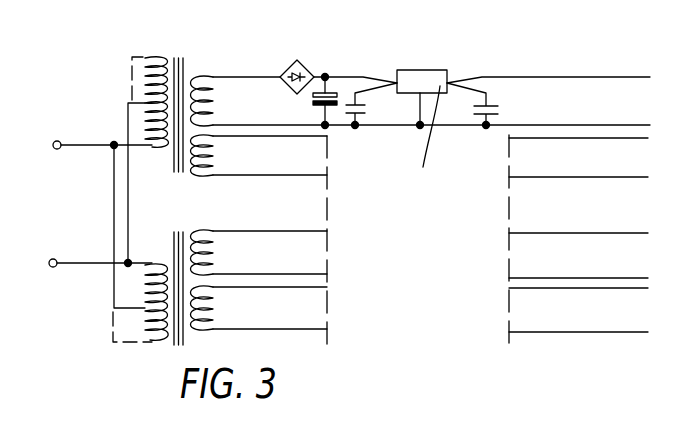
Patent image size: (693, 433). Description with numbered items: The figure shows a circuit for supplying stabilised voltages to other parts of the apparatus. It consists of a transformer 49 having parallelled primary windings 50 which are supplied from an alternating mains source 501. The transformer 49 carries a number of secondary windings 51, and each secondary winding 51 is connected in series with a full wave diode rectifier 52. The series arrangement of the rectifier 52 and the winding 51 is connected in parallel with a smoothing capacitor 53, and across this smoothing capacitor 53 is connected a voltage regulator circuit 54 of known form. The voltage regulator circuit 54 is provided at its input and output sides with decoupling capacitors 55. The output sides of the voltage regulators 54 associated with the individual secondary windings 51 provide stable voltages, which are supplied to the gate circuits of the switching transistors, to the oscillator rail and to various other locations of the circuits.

The transformer core 49 is at (176, 214).
The primary winding 50 is at (145, 120).
The AC power source 501 is at (87, 223).
The secondary windings 51 is at (212, 148).
The rectifier diode 52 is at (302, 58).
The smoothing capacitor 53 is at (317, 108).
The voltage regulator 54 is at (425, 71).
The capacitors 55 is at (367, 115).